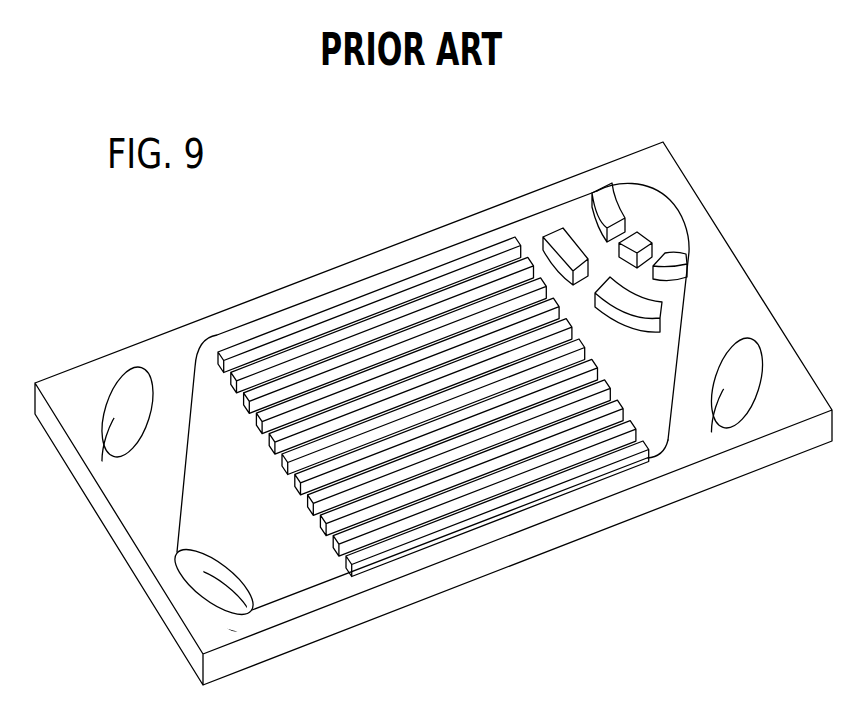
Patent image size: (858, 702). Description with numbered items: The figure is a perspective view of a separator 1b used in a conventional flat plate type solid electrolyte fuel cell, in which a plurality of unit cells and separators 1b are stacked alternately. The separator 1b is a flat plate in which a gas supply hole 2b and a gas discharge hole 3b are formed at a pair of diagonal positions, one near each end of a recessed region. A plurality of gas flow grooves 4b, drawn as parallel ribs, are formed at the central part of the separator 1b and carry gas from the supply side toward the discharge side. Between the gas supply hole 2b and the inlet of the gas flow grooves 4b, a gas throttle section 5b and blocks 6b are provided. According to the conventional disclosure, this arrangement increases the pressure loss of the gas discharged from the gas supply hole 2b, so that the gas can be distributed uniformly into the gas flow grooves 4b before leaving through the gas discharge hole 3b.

The separator 1b is at (515, 177).
The gas supply hole 2b is at (663, 243).
The gas discharge hole 3b is at (222, 593).
The gas flow grooves 4b is at (378, 308).
The gas throttle section 5b is at (603, 196).
The blocks 6b is at (557, 240).